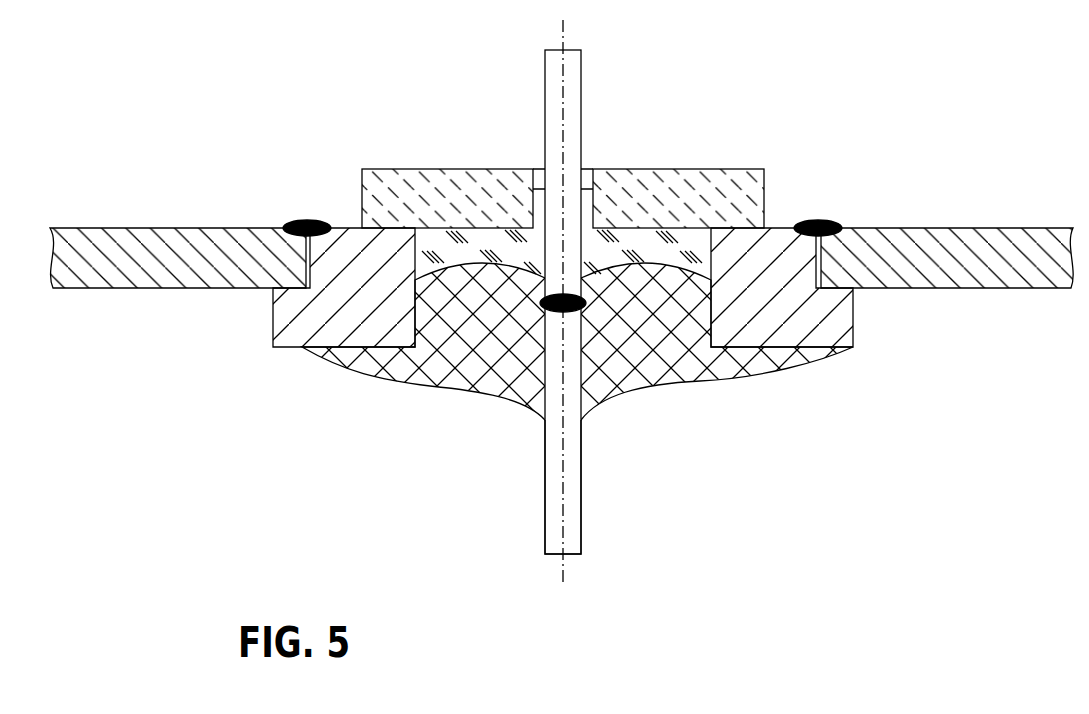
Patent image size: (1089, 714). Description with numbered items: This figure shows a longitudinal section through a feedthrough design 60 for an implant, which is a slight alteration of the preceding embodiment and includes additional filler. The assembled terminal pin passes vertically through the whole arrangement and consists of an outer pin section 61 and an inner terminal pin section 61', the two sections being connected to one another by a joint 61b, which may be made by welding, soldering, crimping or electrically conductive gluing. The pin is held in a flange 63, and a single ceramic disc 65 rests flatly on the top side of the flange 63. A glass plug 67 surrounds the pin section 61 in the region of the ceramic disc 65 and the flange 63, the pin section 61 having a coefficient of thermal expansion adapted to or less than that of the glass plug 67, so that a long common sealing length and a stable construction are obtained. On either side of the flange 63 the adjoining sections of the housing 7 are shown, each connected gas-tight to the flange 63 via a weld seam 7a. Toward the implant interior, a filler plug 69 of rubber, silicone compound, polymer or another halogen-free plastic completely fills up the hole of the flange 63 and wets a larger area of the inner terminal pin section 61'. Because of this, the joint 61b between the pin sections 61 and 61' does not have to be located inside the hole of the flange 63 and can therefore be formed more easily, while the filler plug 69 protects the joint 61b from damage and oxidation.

The design 60 is at (872, 80).
The pin section 61 is at (608, 301).
The inner terminal pin section 61' is at (611, 487).
The joint 61b is at (565, 315).
The flange 63 is at (842, 333).
The ceramic disc 65 is at (712, 176).
The glass plug 67 is at (498, 245).
The filler plug 69 is at (503, 380).
The housing 7 is at (952, 232).
The weld seam 7a is at (823, 222).